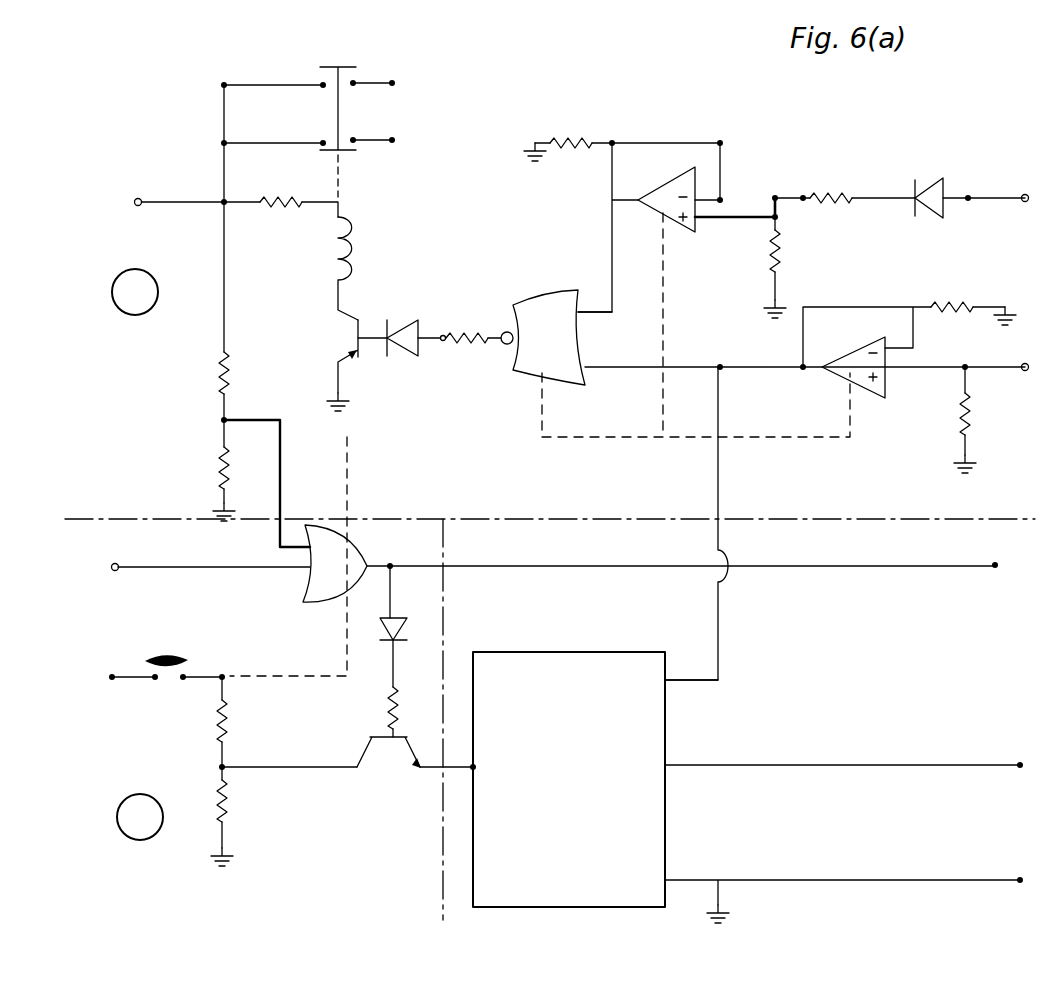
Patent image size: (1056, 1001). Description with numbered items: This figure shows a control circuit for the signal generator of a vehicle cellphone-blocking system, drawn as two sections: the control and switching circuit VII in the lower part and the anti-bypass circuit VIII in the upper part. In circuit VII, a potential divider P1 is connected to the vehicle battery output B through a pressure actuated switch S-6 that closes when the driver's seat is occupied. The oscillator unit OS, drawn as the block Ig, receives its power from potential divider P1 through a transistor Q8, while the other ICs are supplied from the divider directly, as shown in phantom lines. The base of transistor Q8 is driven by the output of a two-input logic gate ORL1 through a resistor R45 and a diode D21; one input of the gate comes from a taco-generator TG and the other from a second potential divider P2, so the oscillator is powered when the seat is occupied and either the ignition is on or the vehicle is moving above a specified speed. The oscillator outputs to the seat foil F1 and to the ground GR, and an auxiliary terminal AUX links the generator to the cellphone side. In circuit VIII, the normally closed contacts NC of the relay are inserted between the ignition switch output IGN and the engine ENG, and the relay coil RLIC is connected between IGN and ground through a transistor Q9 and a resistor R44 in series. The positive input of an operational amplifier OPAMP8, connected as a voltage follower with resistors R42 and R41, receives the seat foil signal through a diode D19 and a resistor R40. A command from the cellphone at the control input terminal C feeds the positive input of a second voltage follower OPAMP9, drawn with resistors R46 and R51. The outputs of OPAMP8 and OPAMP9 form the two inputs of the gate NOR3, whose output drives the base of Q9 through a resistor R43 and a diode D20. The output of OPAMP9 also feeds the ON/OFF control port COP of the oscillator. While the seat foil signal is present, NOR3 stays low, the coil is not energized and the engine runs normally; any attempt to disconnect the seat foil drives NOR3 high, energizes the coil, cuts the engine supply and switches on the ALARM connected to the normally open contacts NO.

The ignition switch output IGN is at (162, 189).
The normally open contacts NO is at (273, 72).
The normally closed contacts NC is at (273, 130).
The alarm ALARM is at (409, 74).
The engine ENG is at (397, 140).
The resistor R44 is at (263, 188).
The relay coil RLIC is at (372, 268).
The transistor Q9 is at (325, 365).
The diode D20 is at (399, 352).
The resistor R43 is at (471, 323).
The logic gate NOR3 is at (556, 353).
The resistor R42 is at (558, 133).
The operational amplifier OPAMP8 is at (656, 211).
The resistor R41 is at (793, 274).
The resistor R40 is at (831, 184).
The diode D19 is at (917, 183).
The seat foil F1 is at (1020, 464).
The resistor R46 is at (973, 299).
The operational amplifier OPAMP9 is at (829, 378).
The resistor R51 is at (984, 433).
The control input terminal C is at (1029, 380).
The circuit VIII is at (135, 292).
The potential divider P2 is at (197, 436).
The two-input logic gate ORL1 is at (318, 579).
The taco-generator TG is at (94, 582).
The diode D21 is at (412, 632).
The resistor R45 is at (412, 708).
The transistor Q8 is at (389, 770).
The vehicle battery output B is at (100, 683).
The pressure actuated switch S-6 is at (165, 684).
The potential divider P1 is at (200, 783).
The control and switching circuit VII is at (140, 817).
The oscillator Ig is at (569, 749).
The ON/OFF control port COP is at (691, 695).
The oscillator unit OS is at (672, 898).
The ground GR is at (1009, 892).
The auxiliary terminal AUX is at (1006, 578).